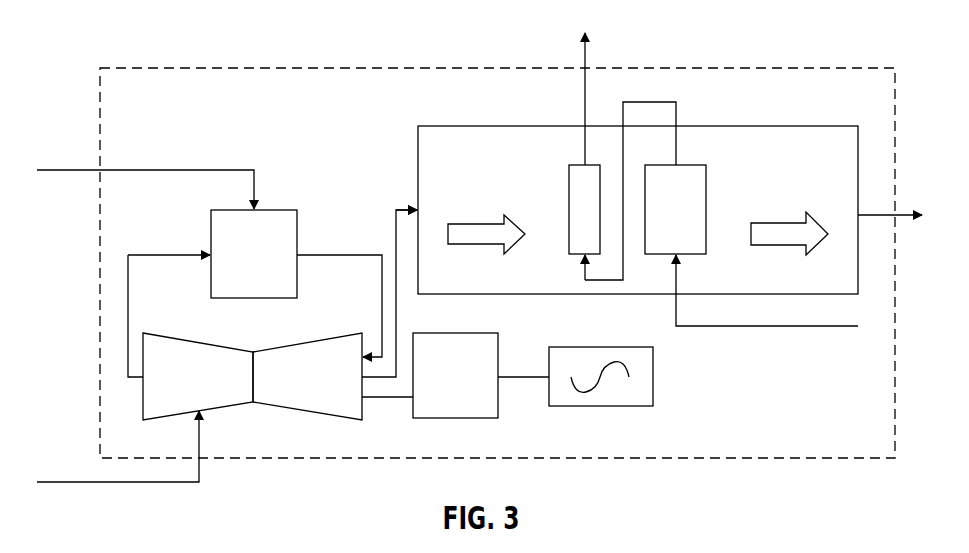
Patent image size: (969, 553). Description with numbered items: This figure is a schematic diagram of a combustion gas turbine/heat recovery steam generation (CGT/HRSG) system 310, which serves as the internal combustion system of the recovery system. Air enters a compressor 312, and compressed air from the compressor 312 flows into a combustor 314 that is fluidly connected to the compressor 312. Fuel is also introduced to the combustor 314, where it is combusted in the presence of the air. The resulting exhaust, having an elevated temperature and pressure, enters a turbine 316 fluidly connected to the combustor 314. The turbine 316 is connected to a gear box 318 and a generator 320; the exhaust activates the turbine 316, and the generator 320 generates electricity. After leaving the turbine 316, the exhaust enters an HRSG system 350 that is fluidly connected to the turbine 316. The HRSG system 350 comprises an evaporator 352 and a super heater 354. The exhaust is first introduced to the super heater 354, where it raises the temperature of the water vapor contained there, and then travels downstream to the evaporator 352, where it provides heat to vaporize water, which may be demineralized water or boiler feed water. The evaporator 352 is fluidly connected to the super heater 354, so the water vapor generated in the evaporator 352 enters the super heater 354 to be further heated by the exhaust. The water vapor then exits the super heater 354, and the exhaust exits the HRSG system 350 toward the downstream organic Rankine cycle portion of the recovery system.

The CGT/HRSG system 310 is at (168, 68).
The compressor 312 is at (143, 399).
The combustor 314 is at (275, 210).
The turbine 316 is at (362, 412).
The gear box 318 is at (430, 333).
The generator 320 is at (585, 347).
The HRSG system 350 is at (790, 126).
The evaporator 352 is at (706, 210).
The super heater 354 is at (569, 213).